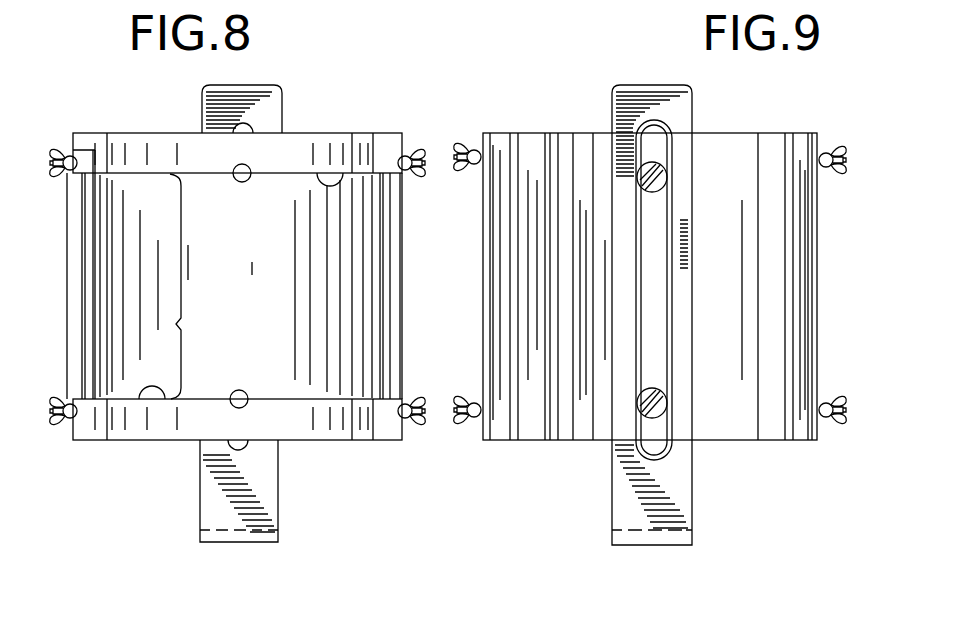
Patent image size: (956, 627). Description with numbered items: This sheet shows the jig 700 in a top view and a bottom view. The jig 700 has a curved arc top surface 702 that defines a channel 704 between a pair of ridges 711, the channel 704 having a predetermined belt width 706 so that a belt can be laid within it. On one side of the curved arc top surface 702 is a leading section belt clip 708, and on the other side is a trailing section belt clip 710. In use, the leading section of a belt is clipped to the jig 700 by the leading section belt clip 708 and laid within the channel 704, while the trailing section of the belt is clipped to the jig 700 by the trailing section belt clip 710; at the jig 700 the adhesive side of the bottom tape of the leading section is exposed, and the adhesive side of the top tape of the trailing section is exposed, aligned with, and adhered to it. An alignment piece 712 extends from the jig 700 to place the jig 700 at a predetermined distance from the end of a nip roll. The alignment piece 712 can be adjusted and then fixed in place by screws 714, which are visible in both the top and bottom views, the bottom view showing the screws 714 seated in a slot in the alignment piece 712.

In FIG. 8, the jig 700 is at (297, 498).
In FIG. 9, the jig 700 is at (716, 502).
In FIG. 8, the curved arc top surface 702 is at (142, 188).
In FIG. 8, the channel 704 is at (278, 188).
In FIG. 8, the predetermined belt width 706 is at (191, 286).
In FIG. 8, the leading section belt clip 708 is at (70, 326).
In FIG. 9, the leading section belt clip 708 is at (820, 264).
In FIG. 8, the trailing section belt clip 710 is at (405, 152).
In FIG. 9, the trailing section belt clip 710 is at (478, 376).
In FIG. 8, the ridges 711 is at (343, 188).
In FIG. 8, the alignment piece 712 is at (200, 483).
In FIG. 9, the alignment piece 712 is at (622, 545).
In FIG. 8, the screws 714 is at (233, 175).
In FIG. 9, the screws 714 is at (667, 167).